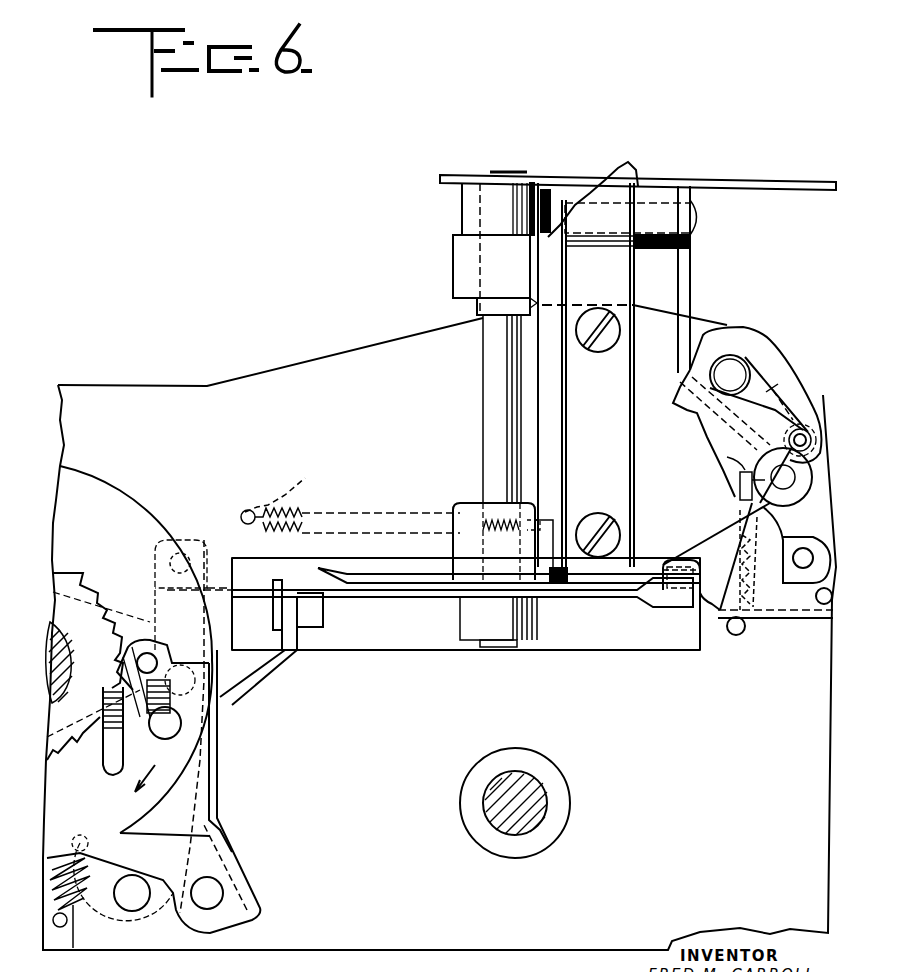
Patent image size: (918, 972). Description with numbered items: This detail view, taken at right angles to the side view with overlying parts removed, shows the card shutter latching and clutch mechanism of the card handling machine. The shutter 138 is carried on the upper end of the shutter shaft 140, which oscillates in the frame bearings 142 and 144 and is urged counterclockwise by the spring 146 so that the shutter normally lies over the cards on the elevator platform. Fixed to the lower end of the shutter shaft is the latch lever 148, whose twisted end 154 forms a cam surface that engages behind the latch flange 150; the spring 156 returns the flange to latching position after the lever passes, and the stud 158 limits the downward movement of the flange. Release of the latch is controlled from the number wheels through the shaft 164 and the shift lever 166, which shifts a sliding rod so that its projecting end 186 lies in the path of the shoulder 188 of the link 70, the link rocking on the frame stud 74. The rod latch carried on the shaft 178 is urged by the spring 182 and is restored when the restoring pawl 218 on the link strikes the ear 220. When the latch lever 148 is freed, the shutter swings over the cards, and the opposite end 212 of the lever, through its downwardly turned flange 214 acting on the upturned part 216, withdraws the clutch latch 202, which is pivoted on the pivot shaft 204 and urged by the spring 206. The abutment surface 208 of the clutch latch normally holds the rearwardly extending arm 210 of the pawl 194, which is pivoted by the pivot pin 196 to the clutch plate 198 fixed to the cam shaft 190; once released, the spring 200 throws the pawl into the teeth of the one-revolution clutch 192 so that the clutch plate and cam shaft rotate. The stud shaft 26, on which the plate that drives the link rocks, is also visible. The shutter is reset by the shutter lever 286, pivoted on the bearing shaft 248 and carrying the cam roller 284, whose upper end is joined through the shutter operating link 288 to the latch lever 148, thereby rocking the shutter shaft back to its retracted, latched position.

The stud shaft 26 is at (538, 790).
The link 70 is at (750, 335).
The frame stud 74 is at (740, 373).
The shutter 138 is at (653, 178).
The shutter shaft 140 is at (485, 375).
The frame bearing 142 is at (458, 255).
The frame bearing 144 is at (465, 503).
The spring 146 is at (305, 478).
The latch lever 148 is at (607, 594).
The latch flange 150 is at (693, 540).
The twisted end of latch lever 154 is at (683, 607).
The spring 156 is at (745, 557).
The stud 158 is at (740, 637).
The shaft 164 is at (700, 218).
The shift lever 166 is at (688, 268).
The shaft of latch flange 178 is at (803, 569).
The spring 182 is at (820, 606).
The projecting end of sliding rod 186 is at (826, 440).
The shoulder 188 is at (727, 453).
The cam shaft 190 is at (60, 640).
The one-revolution clutch 192 is at (90, 575).
The pawl 194 is at (105, 768).
The pivot pin 196 is at (140, 663).
The clutch plate 198 is at (130, 502).
The spring 200 is at (137, 719).
The clutch latch 202 is at (280, 668).
The pivot shaft 204 is at (215, 890).
The spring 206 is at (75, 945).
The abutment surface 208 is at (218, 740).
The rearwardly extending arm 210 is at (210, 668).
The opposite end of latch lever 212 is at (362, 596).
The downwardly turned flange 214 is at (273, 610).
The rearwardly upturned part 216 is at (292, 630).
The restoring pawl 218 is at (745, 487).
The ear 220 is at (760, 500).
The bearing shaft 248 is at (128, 885).
The cam roller 284 is at (200, 712).
The shutter lever 286 is at (200, 790).
The shutter operating link 288 is at (372, 572).